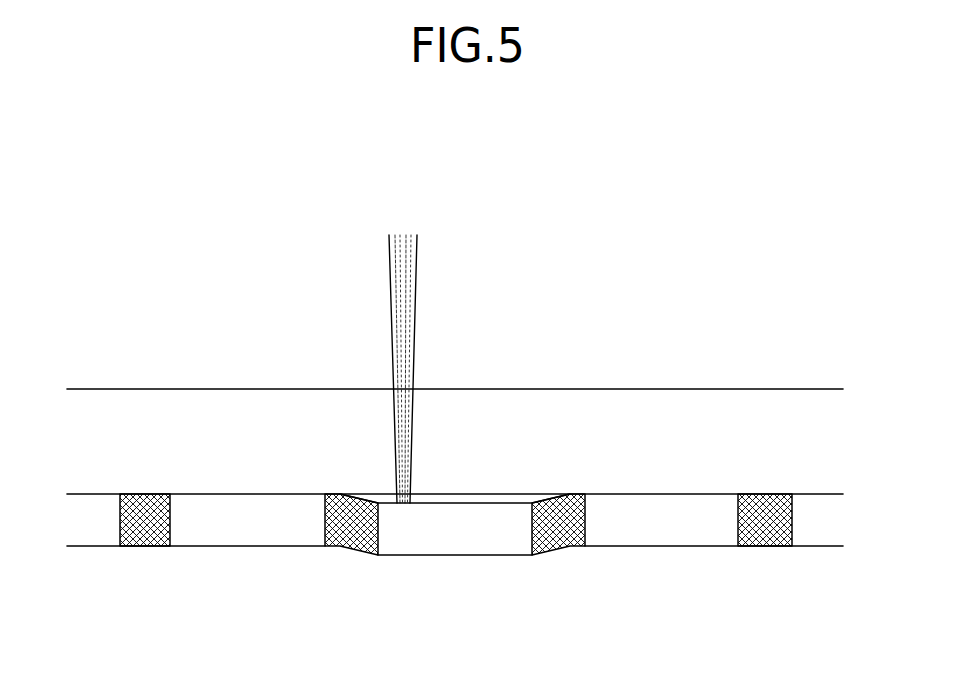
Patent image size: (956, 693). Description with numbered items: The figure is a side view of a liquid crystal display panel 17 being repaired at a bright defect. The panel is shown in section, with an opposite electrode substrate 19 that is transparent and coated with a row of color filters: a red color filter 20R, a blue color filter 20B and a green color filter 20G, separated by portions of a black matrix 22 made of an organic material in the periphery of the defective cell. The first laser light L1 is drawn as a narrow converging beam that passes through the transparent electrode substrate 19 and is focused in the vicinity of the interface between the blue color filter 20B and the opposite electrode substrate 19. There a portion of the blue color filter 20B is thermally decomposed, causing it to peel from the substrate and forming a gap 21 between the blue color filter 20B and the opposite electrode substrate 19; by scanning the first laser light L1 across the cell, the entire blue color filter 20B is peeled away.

The liquid crystal display panel 17 is at (131, 370).
The opposite electrode substrate 19 is at (676, 417).
The gap 21 is at (477, 497).
The black matrix 22 is at (143, 536).
The red color filter 20R is at (233, 538).
The blue color filter 20B is at (462, 538).
The green color filter 20G is at (673, 537).
The first laser light L1 is at (405, 274).